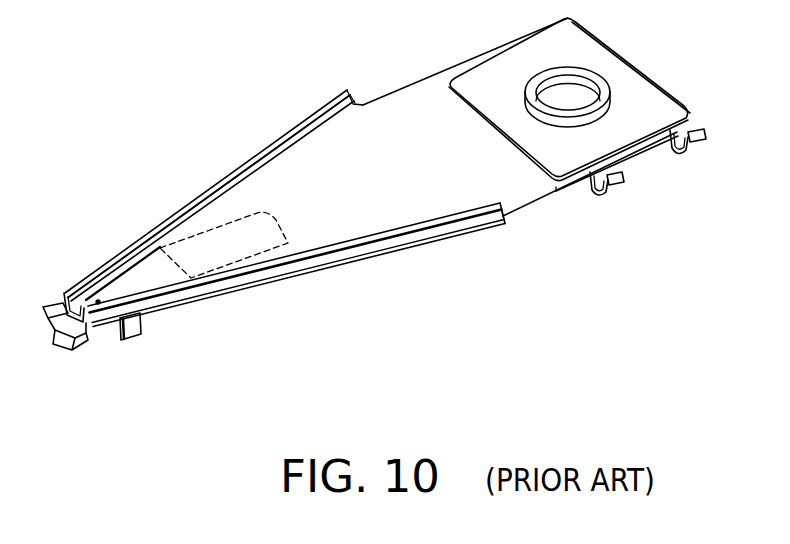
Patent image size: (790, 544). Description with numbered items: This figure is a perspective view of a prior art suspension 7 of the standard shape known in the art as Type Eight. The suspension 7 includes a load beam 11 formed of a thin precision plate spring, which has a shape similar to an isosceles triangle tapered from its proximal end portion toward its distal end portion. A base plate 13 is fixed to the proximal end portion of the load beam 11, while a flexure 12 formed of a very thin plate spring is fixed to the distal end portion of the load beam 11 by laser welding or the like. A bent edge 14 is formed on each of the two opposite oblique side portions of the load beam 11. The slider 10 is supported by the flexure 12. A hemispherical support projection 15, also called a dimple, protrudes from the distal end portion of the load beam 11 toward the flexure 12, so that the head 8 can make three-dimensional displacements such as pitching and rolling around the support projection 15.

The suspension 7 is at (252, 97).
The head 8 is at (143, 339).
The slider 10 is at (81, 350).
The load beam 11 is at (245, 190).
The flexure 12 is at (172, 272).
The base plate 13 is at (500, 68).
The bent edge 14 is at (303, 123).
The support projection 15 is at (97, 299).